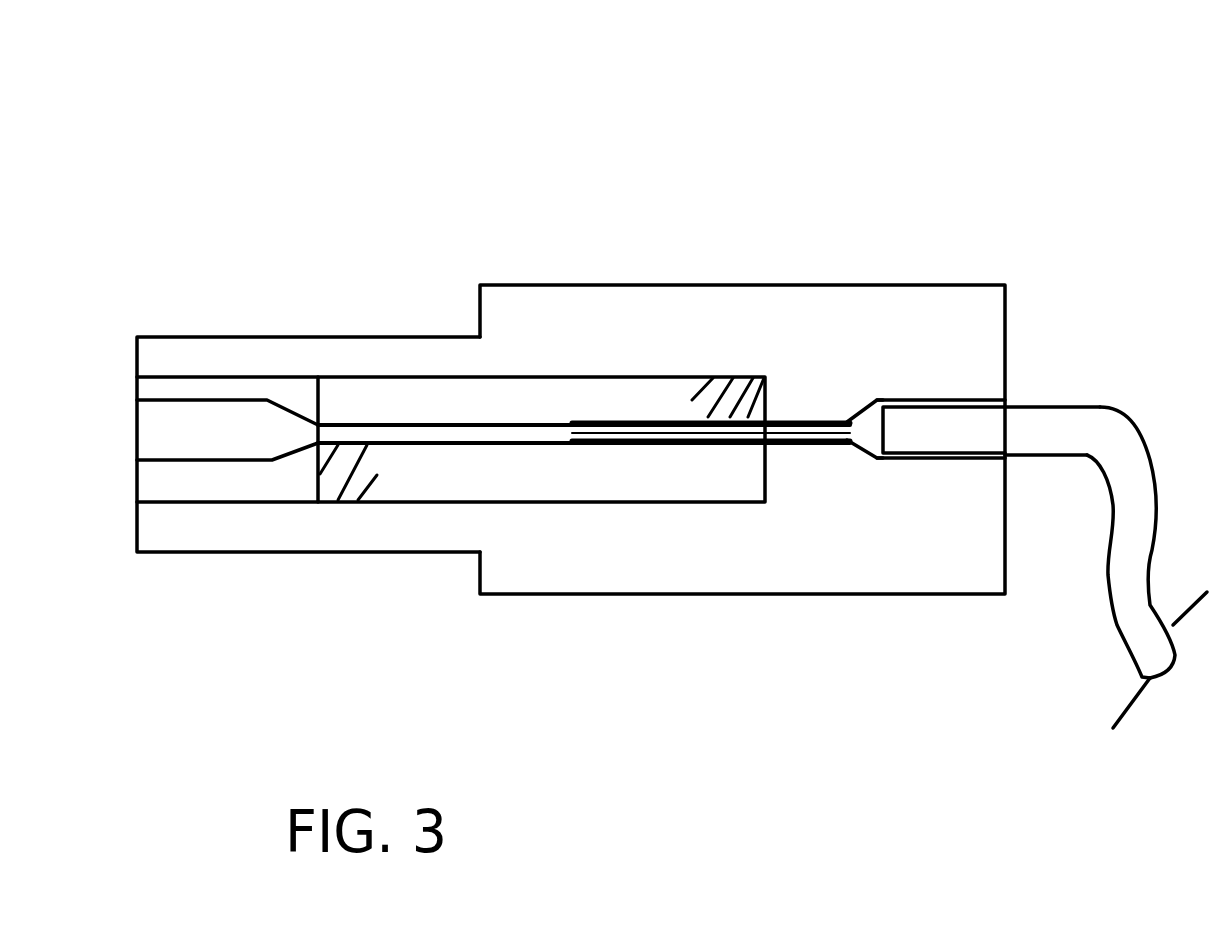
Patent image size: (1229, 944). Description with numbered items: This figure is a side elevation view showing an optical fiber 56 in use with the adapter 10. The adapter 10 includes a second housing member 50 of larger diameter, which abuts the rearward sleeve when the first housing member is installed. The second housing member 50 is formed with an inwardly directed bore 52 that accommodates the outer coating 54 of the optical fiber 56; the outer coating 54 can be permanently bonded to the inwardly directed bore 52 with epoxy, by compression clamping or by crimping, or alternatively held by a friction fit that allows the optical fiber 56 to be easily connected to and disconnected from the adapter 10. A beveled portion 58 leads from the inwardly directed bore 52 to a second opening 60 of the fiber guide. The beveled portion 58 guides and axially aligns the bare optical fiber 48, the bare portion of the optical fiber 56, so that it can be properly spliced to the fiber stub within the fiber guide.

The adapter 10 is at (262, 627).
The bare optical fiber 48 is at (683, 443).
The second housing member 50 is at (627, 285).
The inwardly directed bore 52 is at (940, 458).
The outer coating 54 is at (1045, 410).
The optical fiber 56 is at (1117, 623).
The beveled portion 58 is at (848, 417).
The second opening 60 is at (781, 417).